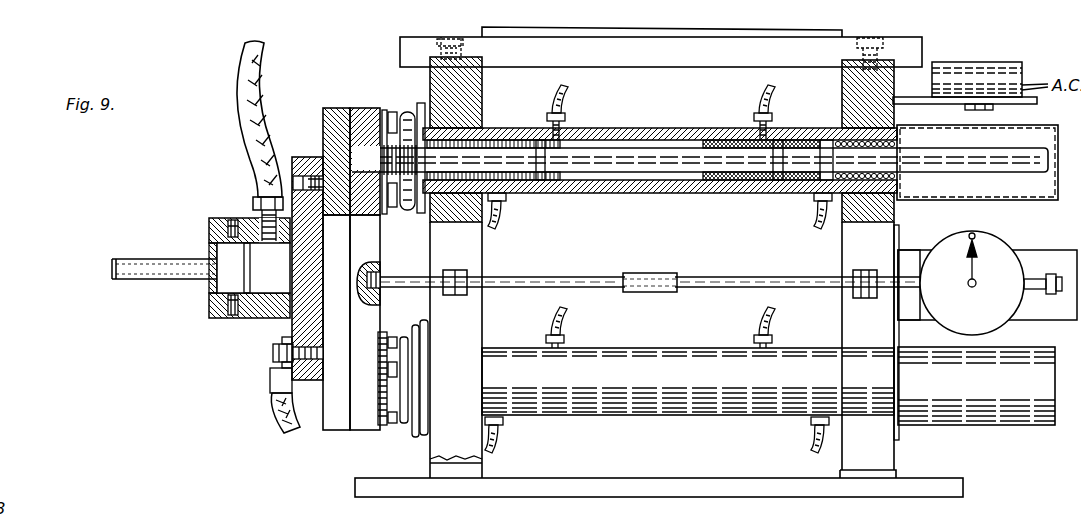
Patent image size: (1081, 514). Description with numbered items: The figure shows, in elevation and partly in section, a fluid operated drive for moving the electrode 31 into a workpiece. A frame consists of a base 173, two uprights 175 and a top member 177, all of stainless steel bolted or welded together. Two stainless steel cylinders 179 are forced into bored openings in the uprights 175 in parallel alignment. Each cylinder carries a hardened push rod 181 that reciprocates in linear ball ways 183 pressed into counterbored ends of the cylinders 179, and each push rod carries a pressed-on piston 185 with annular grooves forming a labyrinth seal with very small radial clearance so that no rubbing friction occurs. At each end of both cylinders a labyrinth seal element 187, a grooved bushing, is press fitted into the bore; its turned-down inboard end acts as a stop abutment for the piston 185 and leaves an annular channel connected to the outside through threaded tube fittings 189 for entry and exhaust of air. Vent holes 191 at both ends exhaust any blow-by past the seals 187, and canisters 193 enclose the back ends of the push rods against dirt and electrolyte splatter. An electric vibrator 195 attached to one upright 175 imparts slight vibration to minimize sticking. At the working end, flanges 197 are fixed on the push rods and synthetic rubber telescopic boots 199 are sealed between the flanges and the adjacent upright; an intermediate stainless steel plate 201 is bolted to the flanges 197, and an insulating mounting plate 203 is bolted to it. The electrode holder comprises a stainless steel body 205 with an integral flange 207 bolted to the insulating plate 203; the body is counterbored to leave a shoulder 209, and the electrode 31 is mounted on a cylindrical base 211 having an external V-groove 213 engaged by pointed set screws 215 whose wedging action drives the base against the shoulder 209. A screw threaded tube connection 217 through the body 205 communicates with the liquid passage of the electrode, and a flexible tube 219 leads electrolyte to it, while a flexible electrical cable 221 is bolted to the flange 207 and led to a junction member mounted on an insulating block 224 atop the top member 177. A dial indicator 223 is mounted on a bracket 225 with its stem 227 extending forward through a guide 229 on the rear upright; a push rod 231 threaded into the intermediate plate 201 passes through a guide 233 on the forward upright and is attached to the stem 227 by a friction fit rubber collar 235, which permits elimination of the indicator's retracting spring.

The electrode 31 is at (148, 272).
The base 173 is at (571, 484).
The uprights 175 is at (428, 459).
The top member 177 is at (686, 57).
The cylinders 179 is at (620, 127).
The push rod 181 is at (661, 158).
The linear ball ways 183 is at (488, 126).
The piston 185 is at (712, 139).
The labyrinth seal element 187 is at (543, 185).
The threaded tube fittings 189 is at (565, 112).
The vent holes 191 is at (503, 204).
The canisters 193 is at (966, 201).
The electric vibrator 195 is at (989, 69).
The flanges 197 is at (390, 98).
The telescopic boots 199 is at (409, 212).
The intermediate plate 201 is at (366, 249).
The insulating mounting plate 203 is at (336, 108).
The body 205 is at (274, 318).
The flange 207 is at (292, 374).
The shoulder 209 is at (242, 292).
The cylindrical base 211 is at (210, 298).
The V-groove 213 is at (210, 229).
The set screws 215 is at (233, 317).
The screw threaded tube connection 217 is at (256, 204).
The flexible tube 219 is at (255, 138).
The flexible electrical cable 221 is at (281, 416).
The dial indicator 223 is at (996, 253).
The insulating block 224 is at (507, 34).
The bracket 225 is at (913, 256).
The stem 227 is at (746, 278).
The guide 229 is at (858, 274).
The push rod 231 is at (568, 277).
The guide 233 is at (455, 279).
The friction fit rubber collar 235 is at (649, 277).